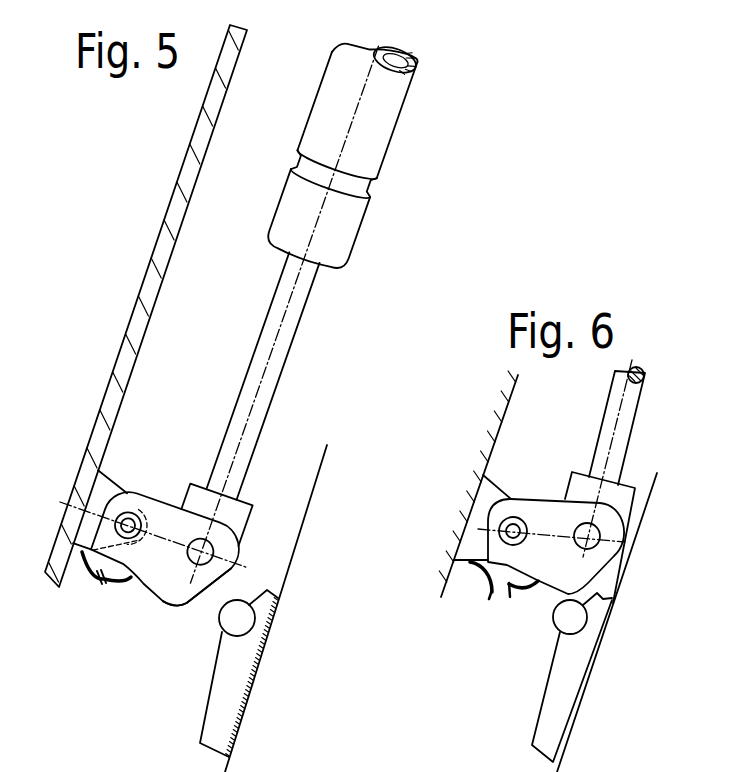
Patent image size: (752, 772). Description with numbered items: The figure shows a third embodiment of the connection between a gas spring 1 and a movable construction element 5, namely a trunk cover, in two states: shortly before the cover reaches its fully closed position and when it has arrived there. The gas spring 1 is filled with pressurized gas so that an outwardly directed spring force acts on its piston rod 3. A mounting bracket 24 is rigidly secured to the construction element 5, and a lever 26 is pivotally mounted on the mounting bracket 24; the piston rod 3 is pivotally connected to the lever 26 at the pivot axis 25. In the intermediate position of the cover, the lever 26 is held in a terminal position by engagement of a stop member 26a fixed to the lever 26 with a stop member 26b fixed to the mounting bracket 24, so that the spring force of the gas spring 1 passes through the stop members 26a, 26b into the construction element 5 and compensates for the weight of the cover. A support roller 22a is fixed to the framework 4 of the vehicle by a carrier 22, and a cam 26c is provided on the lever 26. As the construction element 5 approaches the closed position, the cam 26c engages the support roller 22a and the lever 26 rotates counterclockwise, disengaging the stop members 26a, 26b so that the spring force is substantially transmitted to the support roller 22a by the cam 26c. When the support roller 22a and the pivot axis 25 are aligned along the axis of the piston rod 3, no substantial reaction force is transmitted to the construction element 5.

In FIG. 5, the gas spring 1 is at (398, 176).
In FIG. 5, the piston rod 3 is at (288, 325).
In FIG. 6, the piston rod 3 is at (627, 405).
In FIG. 5, the framework 4 is at (285, 603).
In FIG. 6, the framework 4 is at (572, 733).
In FIG. 5, the construction element 5 is at (172, 218).
In FIG. 6, the construction element 5 is at (519, 404).
In FIG. 5, the carrier 22 is at (225, 667).
In FIG. 6, the carrier 22 is at (577, 655).
In FIG. 5, the support roller 22a is at (242, 625).
In FIG. 6, the support roller 22a is at (577, 617).
In FIG. 5, the mounting bracket 24 is at (100, 492).
In FIG. 6, the mounting bracket 24 is at (475, 542).
In FIG. 5, the pivot axis 25 is at (192, 540).
In FIG. 6, the pivot axis 25 is at (593, 547).
In FIG. 5, the lever 26 is at (143, 593).
In FIG. 5, the stop member 26a is at (108, 588).
In FIG. 6, the stop member 26a is at (518, 600).
In FIG. 5, the stop member 26b is at (90, 582).
In FIG. 6, the stop member 26b is at (478, 597).
In FIG. 5, the cam 26c is at (173, 607).
In FIG. 6, the cam 26c is at (597, 573).